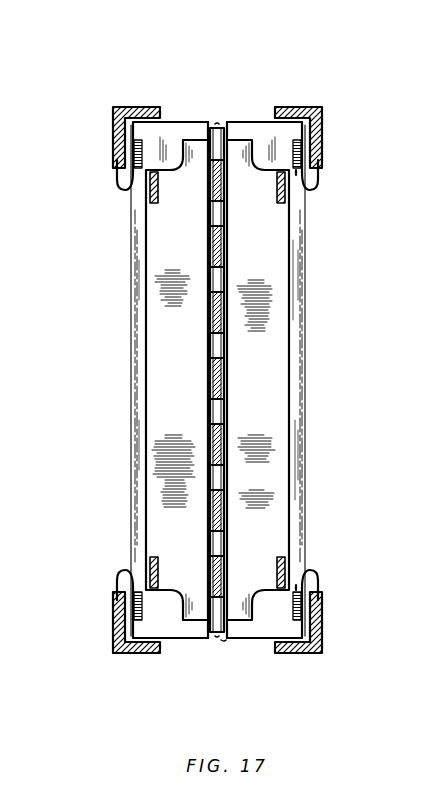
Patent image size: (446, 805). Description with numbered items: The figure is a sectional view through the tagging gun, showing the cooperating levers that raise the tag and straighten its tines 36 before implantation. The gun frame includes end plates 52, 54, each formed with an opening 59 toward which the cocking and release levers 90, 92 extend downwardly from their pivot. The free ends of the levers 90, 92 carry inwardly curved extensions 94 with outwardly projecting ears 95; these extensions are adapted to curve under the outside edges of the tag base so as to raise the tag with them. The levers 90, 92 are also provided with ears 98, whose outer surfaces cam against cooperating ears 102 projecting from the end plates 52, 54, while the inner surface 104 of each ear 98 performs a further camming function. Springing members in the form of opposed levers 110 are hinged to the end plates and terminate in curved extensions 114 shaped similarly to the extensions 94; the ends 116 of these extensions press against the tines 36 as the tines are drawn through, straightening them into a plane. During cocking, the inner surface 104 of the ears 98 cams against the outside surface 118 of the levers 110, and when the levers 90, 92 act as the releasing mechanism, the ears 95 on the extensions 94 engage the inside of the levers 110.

The tines 36 is at (220, 108).
The end plate 52 is at (318, 652).
The end plate 54 is at (304, 108).
The opening 59 is at (227, 648).
The cocking and release lever 90 is at (296, 208).
The cocking and release lever 92 is at (161, 205).
The inwardly curved extension 94 is at (183, 389).
The outwardly projecting ear 95 is at (197, 148).
The ear 98 is at (118, 181).
The cooperating ear 102 is at (218, 379).
The inner surface 104 is at (131, 191).
The springing member lever 110 is at (142, 140).
The curved extension 114 is at (140, 282).
The end 116 is at (219, 121).
The outside surface 118 is at (118, 632).